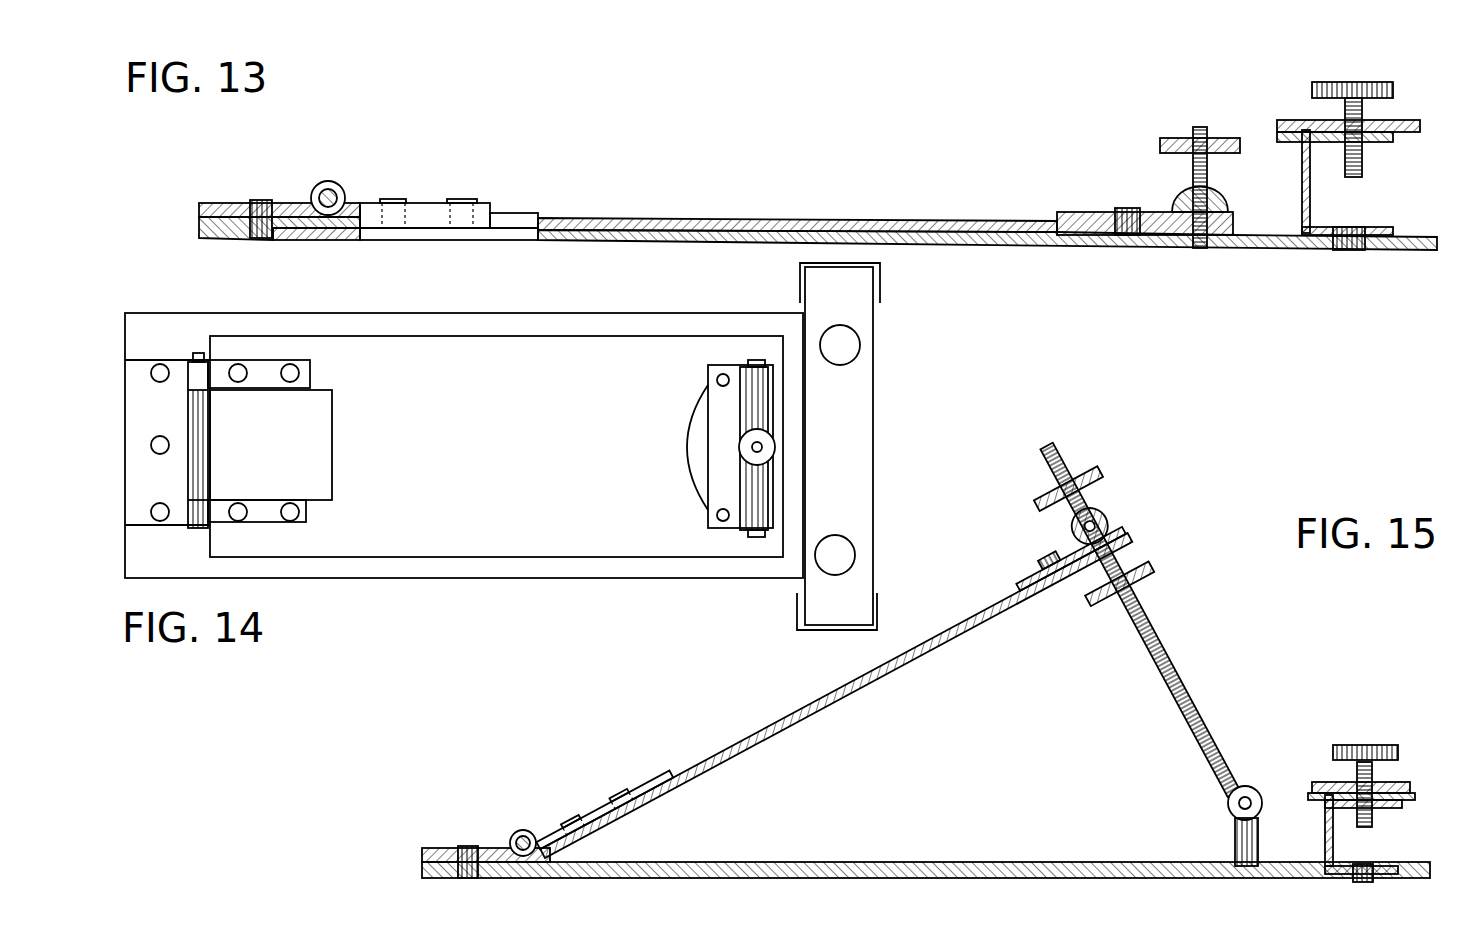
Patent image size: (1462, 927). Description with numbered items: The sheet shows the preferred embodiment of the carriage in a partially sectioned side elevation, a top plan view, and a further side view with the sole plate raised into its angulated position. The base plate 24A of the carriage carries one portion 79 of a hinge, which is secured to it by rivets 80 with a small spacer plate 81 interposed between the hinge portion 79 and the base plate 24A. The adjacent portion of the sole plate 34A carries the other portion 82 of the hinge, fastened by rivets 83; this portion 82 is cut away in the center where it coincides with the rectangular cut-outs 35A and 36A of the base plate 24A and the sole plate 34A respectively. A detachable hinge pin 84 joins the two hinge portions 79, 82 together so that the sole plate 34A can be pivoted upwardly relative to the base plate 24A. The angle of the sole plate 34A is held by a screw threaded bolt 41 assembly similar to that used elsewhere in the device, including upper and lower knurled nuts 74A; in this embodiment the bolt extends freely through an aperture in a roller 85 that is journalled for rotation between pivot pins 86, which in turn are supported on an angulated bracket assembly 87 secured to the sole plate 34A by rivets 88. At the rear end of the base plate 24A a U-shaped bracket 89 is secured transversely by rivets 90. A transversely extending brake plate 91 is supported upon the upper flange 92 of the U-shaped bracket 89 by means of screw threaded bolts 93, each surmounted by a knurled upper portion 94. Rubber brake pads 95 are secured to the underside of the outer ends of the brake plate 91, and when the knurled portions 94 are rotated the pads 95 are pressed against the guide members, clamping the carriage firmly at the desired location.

In FIG. 13, the base plate 24A is at (1105, 245).
In FIG. 14, the base plate 24A is at (380, 578).
In FIG. 15, the base plate 24A is at (970, 866).
In FIG. 13, the sole plate 34A is at (700, 220).
In FIG. 14, the sole plate 34A is at (455, 560).
In FIG. 15, the sole plate 34A is at (844, 710).
In FIG. 13, the rectangular cut-out 35A is at (512, 240).
In FIG. 13, the rectangular cut-out 36A is at (505, 216).
In FIG. 14, the rectangular cut-out 36A is at (310, 448).
In FIG. 13, the screw threaded bolt 41 is at (1200, 127).
In FIG. 14, the screw threaded bolt 41 is at (753, 447).
In FIG. 13, the knurled nuts 74A is at (1175, 140).
In FIG. 14, the knurled nuts 74A is at (745, 458).
In FIG. 13, the hinge portion 79 is at (215, 210).
In FIG. 14, the hinge portion 79 is at (138, 528).
In FIG. 15, the hinge portion 79 is at (428, 848).
In FIG. 13, the rivets 80 is at (272, 182).
In FIG. 14, the rivets 80 is at (160, 382).
In FIG. 15, the rivets 80 is at (478, 828).
In FIG. 13, the spacer plate 81 is at (199, 220).
In FIG. 15, the spacer plate 81 is at (422, 864).
In FIG. 13, the hinge portion 82 is at (425, 208).
In FIG. 14, the hinge portion 82 is at (313, 386).
In FIG. 13, the rivets 83 is at (456, 203).
In FIG. 14, the rivets 83 is at (290, 365).
In FIG. 13, the hinge pin 84 is at (338, 186).
In FIG. 14, the hinge pin 84 is at (200, 530).
In FIG. 15, the hinge pin 84 is at (536, 812).
In FIG. 14, the roller 85 is at (741, 425).
In FIG. 14, the pivot pins 86 is at (752, 361).
In FIG. 13, the angulated bracket assembly 87 is at (1063, 212).
In FIG. 14, the angulated bracket assembly 87 is at (707, 490).
In FIG. 13, the rivets 88 is at (1130, 208).
In FIG. 13, the U-shaped bracket 89 is at (1300, 205).
In FIG. 15, the U-shaped bracket 89 is at (1325, 840).
In FIG. 13, the rivets 90 is at (1352, 250).
In FIG. 15, the rivets 90 is at (1362, 864).
In FIG. 13, the brake plate 91 is at (1280, 120).
In FIG. 14, the brake plate 91 is at (872, 373).
In FIG. 15, the brake plate 91 is at (1314, 782).
In FIG. 13, the upper flange 92 is at (1395, 142).
In FIG. 15, the upper flange 92 is at (1398, 802).
In FIG. 13, the screw threaded bolts 93 is at (1358, 178).
In FIG. 15, the screw threaded bolts 93 is at (1368, 828).
In FIG. 13, the knurled upper portions 94 is at (1393, 90).
In FIG. 14, the knurled upper portions 94 is at (845, 550).
In FIG. 15, the knurled upper portions 94 is at (1395, 745).
In FIG. 13, the rubber brake pads 95 is at (1282, 133).
In FIG. 14, the rubber brake pads 95 is at (880, 283).
In FIG. 15, the rubber brake pads 95 is at (1308, 798).